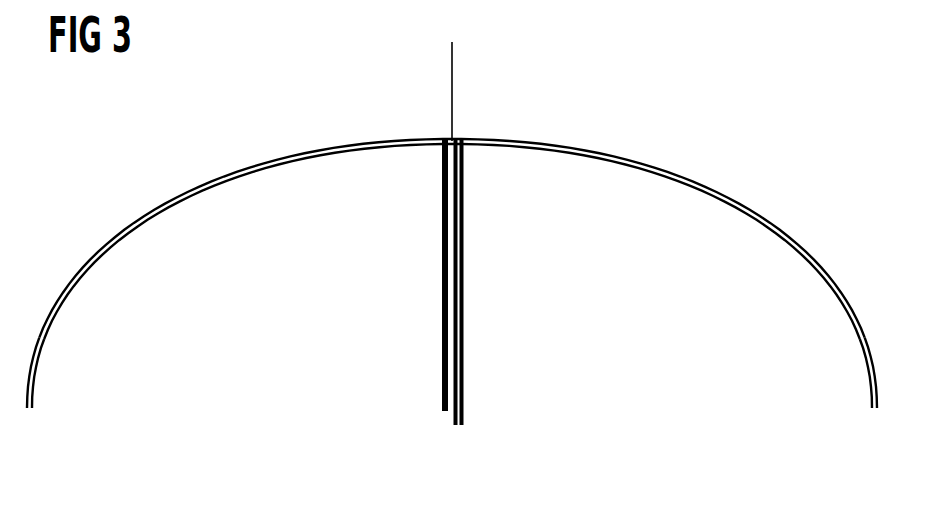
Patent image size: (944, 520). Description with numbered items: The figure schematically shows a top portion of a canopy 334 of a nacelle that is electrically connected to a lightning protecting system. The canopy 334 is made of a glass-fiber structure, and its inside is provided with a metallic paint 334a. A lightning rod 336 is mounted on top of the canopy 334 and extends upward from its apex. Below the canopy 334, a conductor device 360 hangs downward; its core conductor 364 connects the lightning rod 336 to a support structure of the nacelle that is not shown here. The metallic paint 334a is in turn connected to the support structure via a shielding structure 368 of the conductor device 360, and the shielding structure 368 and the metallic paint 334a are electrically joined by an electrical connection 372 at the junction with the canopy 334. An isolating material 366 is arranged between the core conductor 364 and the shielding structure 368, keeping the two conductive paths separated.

The canopy 334 is at (205, 188).
The metallic paint 334a is at (42, 349).
The lightning rod 336 is at (454, 72).
The conductor device 360 is at (430, 315).
The core conductor 364 is at (456, 428).
The isolating material 366 is at (445, 414).
The shielding structure 368 is at (465, 285).
The electrical connection 372 is at (431, 157).